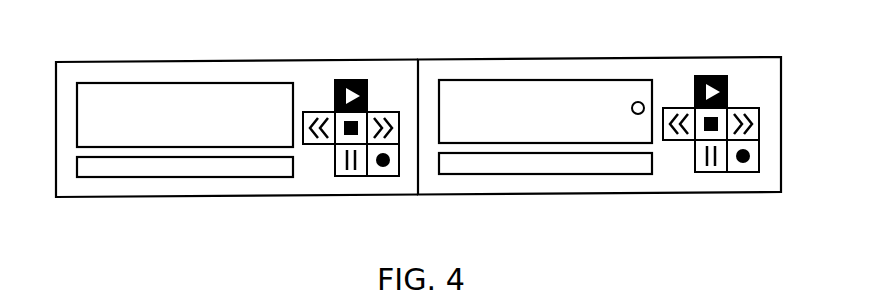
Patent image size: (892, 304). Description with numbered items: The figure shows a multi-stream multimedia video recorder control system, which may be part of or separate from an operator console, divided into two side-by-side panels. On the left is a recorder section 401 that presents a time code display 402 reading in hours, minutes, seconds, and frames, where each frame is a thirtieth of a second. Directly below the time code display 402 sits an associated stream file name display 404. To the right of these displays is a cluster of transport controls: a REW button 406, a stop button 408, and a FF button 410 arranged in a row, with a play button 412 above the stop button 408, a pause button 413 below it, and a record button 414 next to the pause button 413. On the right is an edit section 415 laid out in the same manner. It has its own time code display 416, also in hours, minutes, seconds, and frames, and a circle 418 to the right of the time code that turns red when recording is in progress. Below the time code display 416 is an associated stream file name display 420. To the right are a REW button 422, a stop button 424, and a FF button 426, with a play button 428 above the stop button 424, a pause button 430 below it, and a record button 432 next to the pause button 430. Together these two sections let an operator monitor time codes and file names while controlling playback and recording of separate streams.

The recorder section 401 is at (55, 187).
The time code display 402 is at (205, 82).
The stream file name display 404 is at (185, 177).
The REW button 406 is at (322, 110).
The stop button 408 is at (335, 145).
The FF button 410 is at (377, 110).
The play button 412 is at (358, 80).
The pause button 413 is at (343, 176).
The record button 414 is at (398, 176).
The edit section 415 is at (782, 178).
The time code display 416 is at (567, 78).
The circle 418 is at (637, 101).
The stream file name display 420 is at (545, 174).
The REW button 422 is at (682, 107).
The stop button 424 is at (695, 142).
The FF button 426 is at (738, 107).
The play button 428 is at (718, 75).
The pause button 430 is at (701, 173).
The record button 432 is at (762, 172).